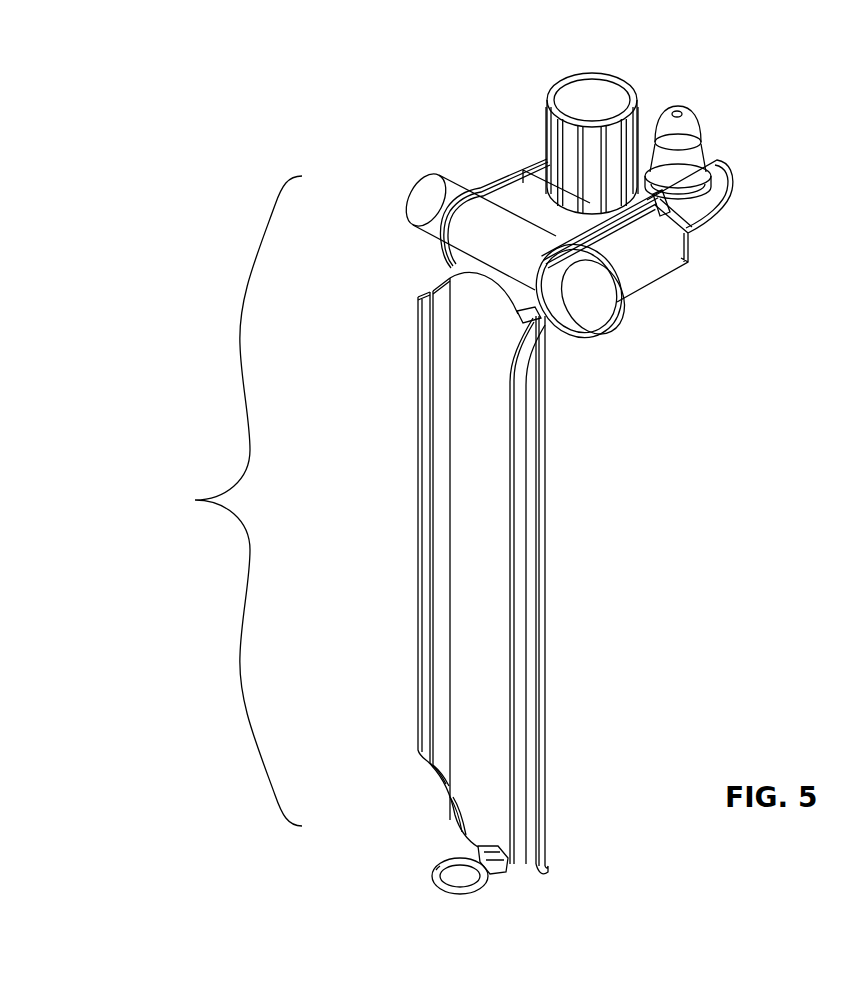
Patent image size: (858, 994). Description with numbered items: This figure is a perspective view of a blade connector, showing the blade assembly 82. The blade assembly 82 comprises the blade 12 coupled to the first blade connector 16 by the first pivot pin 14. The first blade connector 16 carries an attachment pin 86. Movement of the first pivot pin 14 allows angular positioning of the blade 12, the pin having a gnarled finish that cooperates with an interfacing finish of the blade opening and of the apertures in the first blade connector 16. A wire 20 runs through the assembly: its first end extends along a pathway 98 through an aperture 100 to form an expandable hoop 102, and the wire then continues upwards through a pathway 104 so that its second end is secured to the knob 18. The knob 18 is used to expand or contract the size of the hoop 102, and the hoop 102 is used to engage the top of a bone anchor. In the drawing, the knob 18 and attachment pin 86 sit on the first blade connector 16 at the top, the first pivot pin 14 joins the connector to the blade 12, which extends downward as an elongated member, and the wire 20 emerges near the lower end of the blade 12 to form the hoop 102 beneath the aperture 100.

The blade 12 is at (482, 550).
The first pivot pin 14 is at (590, 302).
The first blade connector 16 is at (678, 245).
The knob 18 is at (581, 98).
The wire 20 is at (467, 890).
The blade assembly 82 is at (195, 500).
The attachment pin 86 is at (688, 130).
The pathway 98 is at (547, 303).
The aperture 100 is at (512, 878).
The expandable hoop 102 is at (435, 877).
The pathway 104 is at (445, 232).